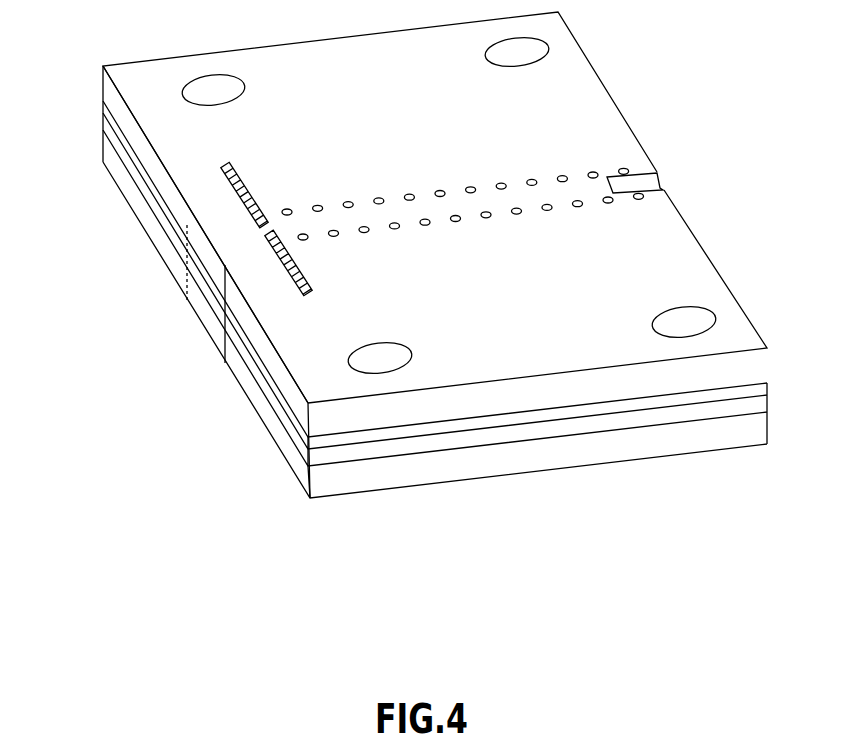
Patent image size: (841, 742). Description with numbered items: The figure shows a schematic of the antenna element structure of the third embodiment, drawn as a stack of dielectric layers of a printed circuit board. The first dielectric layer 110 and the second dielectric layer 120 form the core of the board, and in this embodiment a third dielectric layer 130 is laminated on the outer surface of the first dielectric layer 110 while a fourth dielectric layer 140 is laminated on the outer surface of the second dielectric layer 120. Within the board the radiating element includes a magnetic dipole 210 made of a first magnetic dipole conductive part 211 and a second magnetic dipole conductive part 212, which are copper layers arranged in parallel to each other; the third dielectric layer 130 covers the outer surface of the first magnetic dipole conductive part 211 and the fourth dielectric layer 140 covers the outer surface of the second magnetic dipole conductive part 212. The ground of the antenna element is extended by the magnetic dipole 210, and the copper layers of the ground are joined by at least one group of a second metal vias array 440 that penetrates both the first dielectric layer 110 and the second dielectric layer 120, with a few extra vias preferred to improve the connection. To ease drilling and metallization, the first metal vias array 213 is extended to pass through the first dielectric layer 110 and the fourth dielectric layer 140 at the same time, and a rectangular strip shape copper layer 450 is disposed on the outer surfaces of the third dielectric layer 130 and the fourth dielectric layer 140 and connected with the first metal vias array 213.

The first dielectric layer 110 is at (603, 408).
The second dielectric layer 120 is at (707, 413).
The third dielectric layer 130 is at (513, 393).
The fourth dielectric layer 140 is at (648, 435).
The magnetic dipole 210 is at (230, 480).
The first magnetic dipole conductive part 211 is at (200, 237).
The second magnetic dipole conductive part 212 is at (215, 328).
The first metal vias array 213 is at (228, 167).
The second metal vias array 440 is at (518, 50).
The strip shape copper layer 450 is at (258, 226).